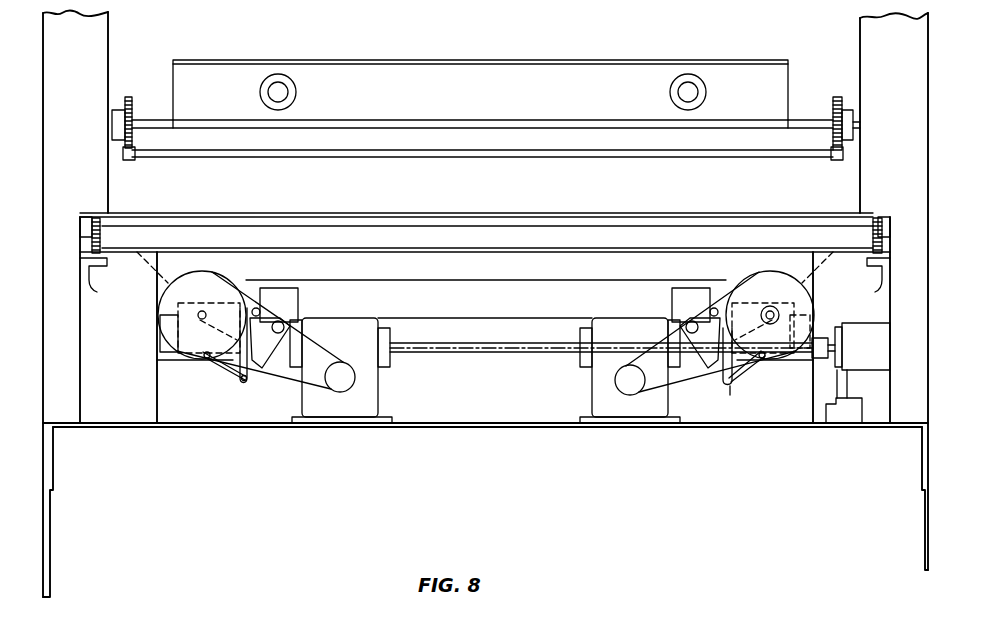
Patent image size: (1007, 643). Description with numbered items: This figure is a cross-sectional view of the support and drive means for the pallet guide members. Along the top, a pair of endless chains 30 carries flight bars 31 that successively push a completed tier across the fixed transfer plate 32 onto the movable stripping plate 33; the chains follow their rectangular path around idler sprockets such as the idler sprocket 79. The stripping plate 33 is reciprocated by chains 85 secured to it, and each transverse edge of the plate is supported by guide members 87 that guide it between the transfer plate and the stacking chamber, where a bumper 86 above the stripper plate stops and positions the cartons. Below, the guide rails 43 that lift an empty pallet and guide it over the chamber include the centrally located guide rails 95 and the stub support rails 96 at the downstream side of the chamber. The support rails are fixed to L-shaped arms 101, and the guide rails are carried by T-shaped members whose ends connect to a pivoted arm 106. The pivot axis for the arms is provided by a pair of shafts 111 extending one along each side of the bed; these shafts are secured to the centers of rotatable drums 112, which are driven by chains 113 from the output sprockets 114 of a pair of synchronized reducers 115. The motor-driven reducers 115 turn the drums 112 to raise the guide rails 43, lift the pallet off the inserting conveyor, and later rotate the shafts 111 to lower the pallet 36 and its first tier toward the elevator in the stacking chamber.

The endless chains 30 is at (134, 160).
The flight bars 31 is at (727, 158).
The transfer plate 32 is at (642, 213).
The stripping plate 33 is at (568, 246).
The pallet 36 is at (512, 320).
The guide rails 43 is at (740, 400).
The idler sprocket 79 is at (835, 98).
The chains 85 is at (92, 218).
The bumper 86 is at (588, 62).
The guide members 87 is at (498, 287).
The guide rails 95 is at (258, 310).
The stub support rails 96 is at (280, 326).
The L-shaped arms 101 is at (310, 338).
The arm 106 is at (226, 378).
The shafts 111 is at (198, 312).
The drums 112 is at (220, 294).
The chains 113 is at (272, 386).
The output sprockets 114 is at (340, 392).
The reducers 115 is at (378, 392).